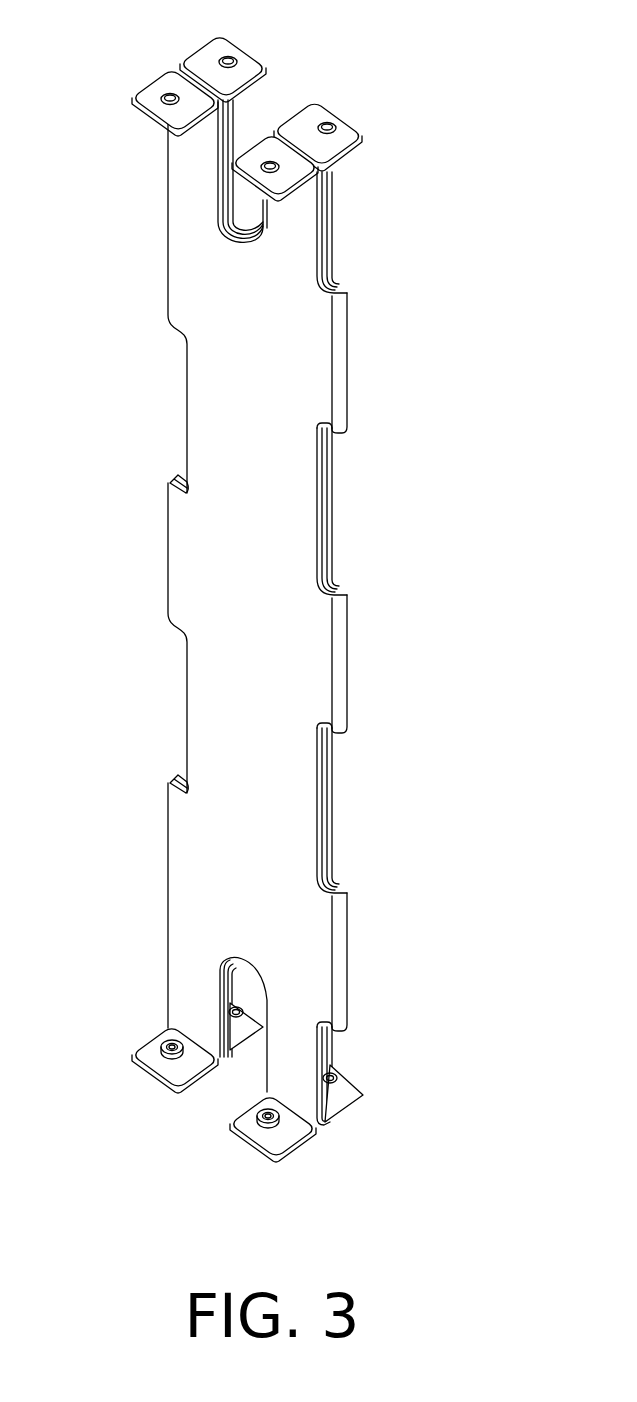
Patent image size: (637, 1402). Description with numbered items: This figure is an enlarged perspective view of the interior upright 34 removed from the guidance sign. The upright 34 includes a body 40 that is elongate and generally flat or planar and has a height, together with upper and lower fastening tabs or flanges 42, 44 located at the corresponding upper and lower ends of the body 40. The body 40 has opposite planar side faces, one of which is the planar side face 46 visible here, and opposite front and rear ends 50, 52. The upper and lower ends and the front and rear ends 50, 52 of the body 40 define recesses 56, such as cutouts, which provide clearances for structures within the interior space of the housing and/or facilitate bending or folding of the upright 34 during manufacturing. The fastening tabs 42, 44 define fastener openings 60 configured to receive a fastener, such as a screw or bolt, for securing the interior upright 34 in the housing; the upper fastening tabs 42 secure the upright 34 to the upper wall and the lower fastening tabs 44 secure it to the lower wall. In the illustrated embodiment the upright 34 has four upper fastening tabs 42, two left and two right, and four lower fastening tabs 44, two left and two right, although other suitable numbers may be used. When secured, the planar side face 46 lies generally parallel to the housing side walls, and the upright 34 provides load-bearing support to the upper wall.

The interior upright 34 is at (403, 49).
The body 40 is at (193, 597).
The upper fastening tabs 42 is at (132, 96).
The lower fastening tabs 44 is at (142, 1068).
The planar side face 46 is at (238, 609).
The front end 50 is at (335, 665).
The rear end 52 is at (168, 535).
The recesses 56 is at (185, 382).
The fastener openings 60 is at (170, 94).